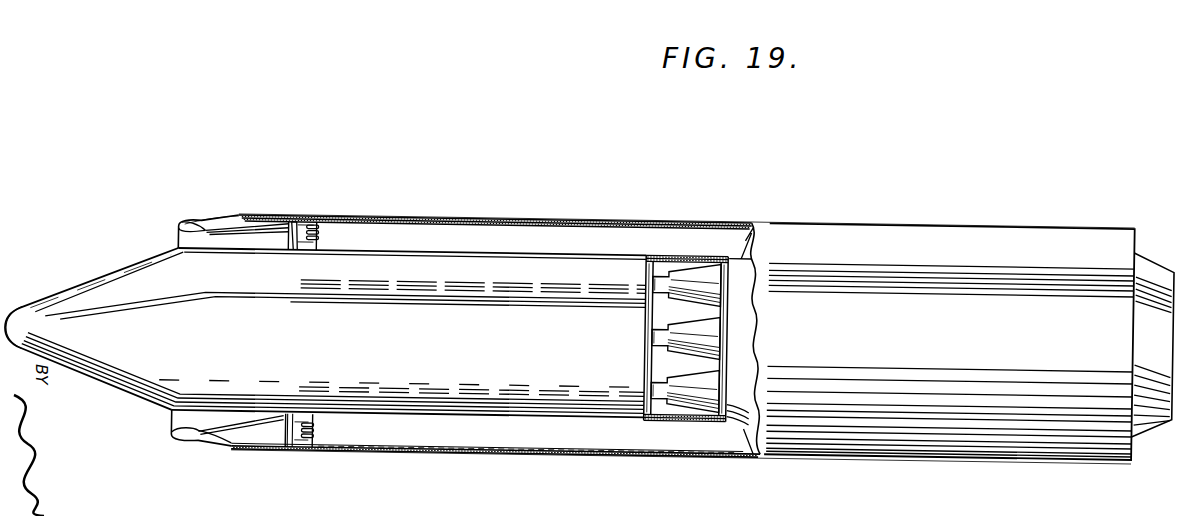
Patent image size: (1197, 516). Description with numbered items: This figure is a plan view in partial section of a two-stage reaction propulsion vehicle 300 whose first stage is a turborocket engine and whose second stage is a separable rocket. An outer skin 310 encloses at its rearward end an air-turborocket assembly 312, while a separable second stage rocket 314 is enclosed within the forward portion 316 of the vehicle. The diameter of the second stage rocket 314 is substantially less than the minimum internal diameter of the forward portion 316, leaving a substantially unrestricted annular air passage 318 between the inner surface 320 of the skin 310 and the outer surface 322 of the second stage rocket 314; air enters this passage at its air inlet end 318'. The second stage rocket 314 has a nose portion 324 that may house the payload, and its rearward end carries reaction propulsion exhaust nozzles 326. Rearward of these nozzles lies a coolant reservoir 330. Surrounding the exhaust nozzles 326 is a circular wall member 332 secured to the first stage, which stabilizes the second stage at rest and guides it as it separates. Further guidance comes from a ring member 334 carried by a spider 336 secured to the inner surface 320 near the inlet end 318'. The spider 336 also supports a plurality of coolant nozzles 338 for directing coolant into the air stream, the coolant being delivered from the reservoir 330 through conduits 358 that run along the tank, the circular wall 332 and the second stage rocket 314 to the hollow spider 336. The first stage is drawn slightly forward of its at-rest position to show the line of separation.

The two-stage reaction propulsion vehicle 300 is at (470, 207).
The outer skin 310 is at (590, 450).
The air-turborocket assembly 312 is at (886, 199).
The second stage rocket 314 is at (108, 267).
The forward portion 316 is at (293, 452).
The annular air passage 318 is at (204, 428).
The air inlet end 318' is at (210, 217).
The inner surface 320 is at (447, 433).
The outer surface 322 is at (548, 344).
The nose portion 324 is at (20, 318).
The reaction propulsion exhaust nozzles 326 is at (700, 372).
The coolant reservoir 330 is at (748, 331).
The circular wall member 332 is at (677, 255).
The ring member 334 is at (293, 232).
The spider 336 is at (277, 217).
The coolant nozzles 338 is at (318, 228).
The conduits 358 is at (660, 422).